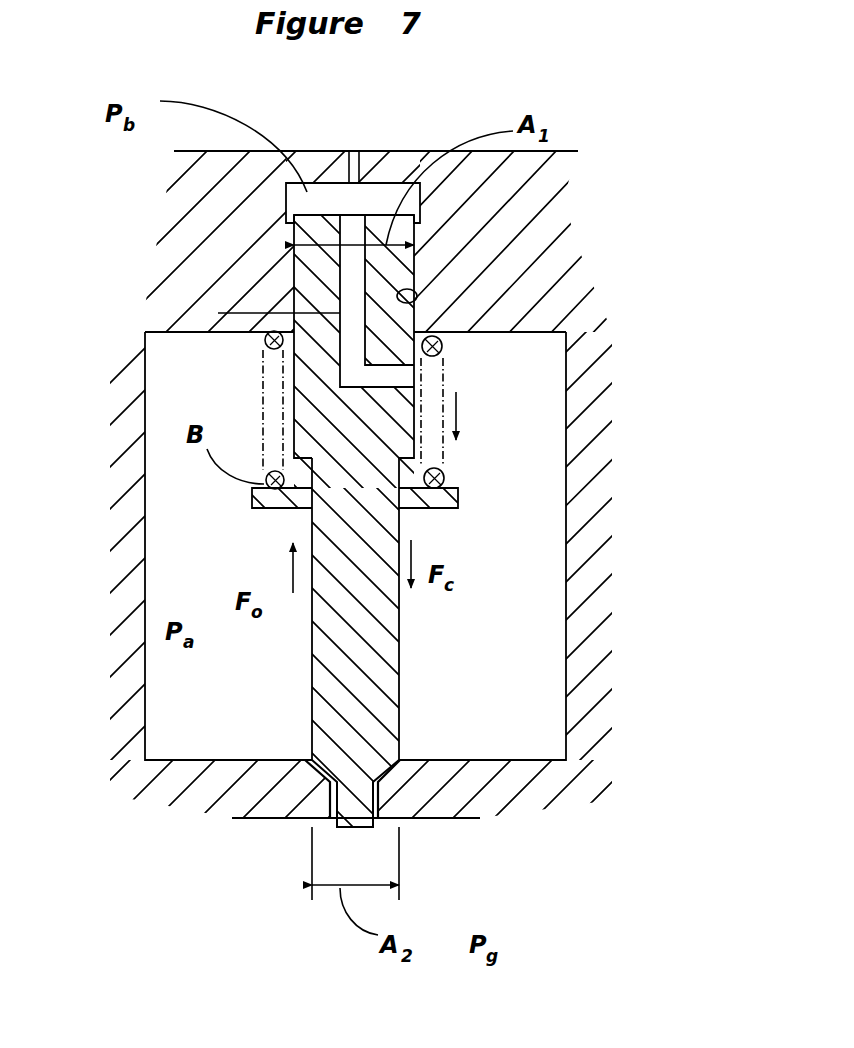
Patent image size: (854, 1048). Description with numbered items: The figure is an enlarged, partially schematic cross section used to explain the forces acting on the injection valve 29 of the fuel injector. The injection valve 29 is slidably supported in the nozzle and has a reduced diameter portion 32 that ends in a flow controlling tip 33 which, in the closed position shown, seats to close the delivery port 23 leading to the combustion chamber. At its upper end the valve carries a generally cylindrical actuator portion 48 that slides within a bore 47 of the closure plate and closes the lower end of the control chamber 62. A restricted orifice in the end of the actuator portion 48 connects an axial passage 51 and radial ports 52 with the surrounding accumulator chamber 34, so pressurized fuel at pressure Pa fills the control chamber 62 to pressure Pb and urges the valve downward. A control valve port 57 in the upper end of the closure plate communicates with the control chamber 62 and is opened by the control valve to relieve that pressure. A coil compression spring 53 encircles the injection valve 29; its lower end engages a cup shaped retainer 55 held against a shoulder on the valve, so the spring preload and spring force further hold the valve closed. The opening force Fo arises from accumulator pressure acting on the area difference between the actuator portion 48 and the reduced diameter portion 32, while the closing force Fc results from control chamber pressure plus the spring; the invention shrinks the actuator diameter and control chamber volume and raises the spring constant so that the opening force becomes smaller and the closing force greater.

The delivery port 23 is at (374, 822).
The injection valve 29 is at (312, 658).
The reduced diameter portion 32 is at (399, 704).
The flow controlling tip 33 is at (330, 797).
The accumulator chamber 34 is at (494, 632).
The bore 47 is at (415, 285).
The actuator portion 48 is at (415, 273).
The axial passage 51 is at (218, 313).
The radial ports 52 is at (392, 387).
The coil compression spring 53 is at (444, 480).
The cup shaped retainer 55 is at (250, 497).
The control valve port 57 is at (350, 150).
The control chamber 62 is at (382, 183).